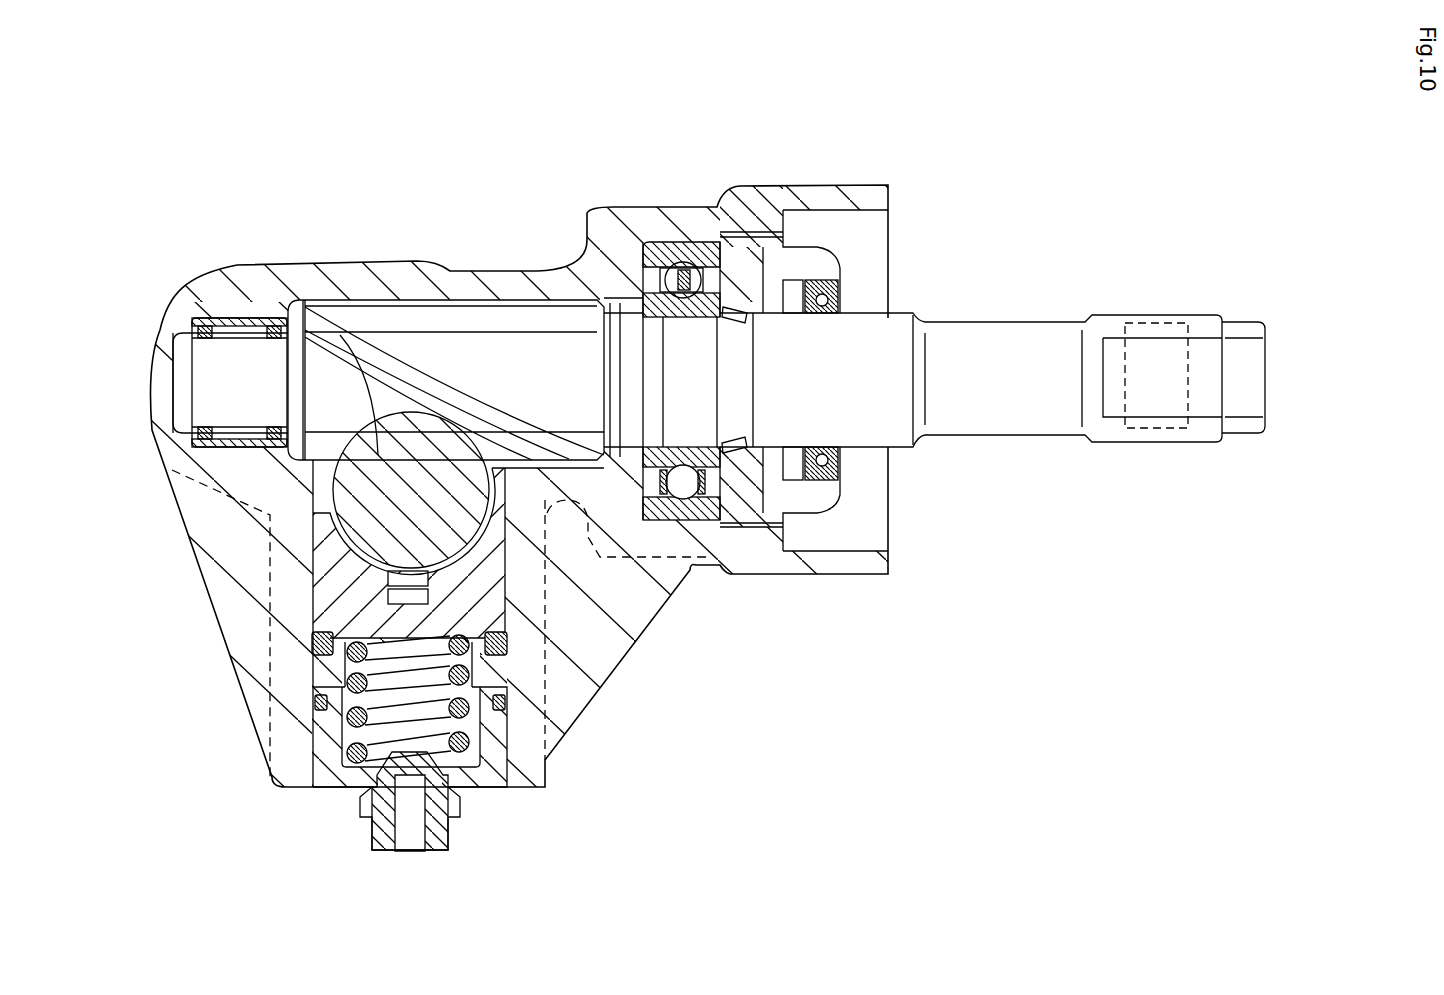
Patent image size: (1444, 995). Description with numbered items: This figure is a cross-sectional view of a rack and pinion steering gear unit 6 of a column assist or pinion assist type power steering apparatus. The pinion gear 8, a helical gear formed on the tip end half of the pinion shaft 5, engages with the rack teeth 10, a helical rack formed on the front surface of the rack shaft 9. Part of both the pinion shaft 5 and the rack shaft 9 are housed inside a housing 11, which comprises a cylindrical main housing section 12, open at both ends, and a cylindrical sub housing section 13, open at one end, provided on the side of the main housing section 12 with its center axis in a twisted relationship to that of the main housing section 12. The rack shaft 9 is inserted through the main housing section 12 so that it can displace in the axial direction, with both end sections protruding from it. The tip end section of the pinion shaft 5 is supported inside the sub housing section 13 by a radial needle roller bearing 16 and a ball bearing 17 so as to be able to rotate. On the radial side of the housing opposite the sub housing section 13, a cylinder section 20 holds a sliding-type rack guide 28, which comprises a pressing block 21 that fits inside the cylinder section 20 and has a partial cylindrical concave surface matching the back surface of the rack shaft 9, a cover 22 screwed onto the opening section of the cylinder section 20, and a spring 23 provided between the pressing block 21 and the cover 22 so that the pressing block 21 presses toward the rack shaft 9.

The pinion shaft 5 is at (1008, 355).
The steering gear unit 6 is at (467, 270).
The pinion gear 8 is at (395, 323).
The rack shaft 9 is at (470, 503).
The rack teeth 10 is at (264, 270).
The housing 11 is at (593, 202).
The main housing section 12 is at (268, 482).
The sub housing section 13 is at (315, 290).
The radial needle roller bearing 16 is at (233, 337).
The ball bearing 17 is at (683, 270).
The cylinder section 20 is at (530, 587).
The pressing block 21 is at (478, 615).
The cover 22 is at (483, 770).
The spring 23 is at (350, 723).
The sliding-type rack guide 28 is at (520, 677).